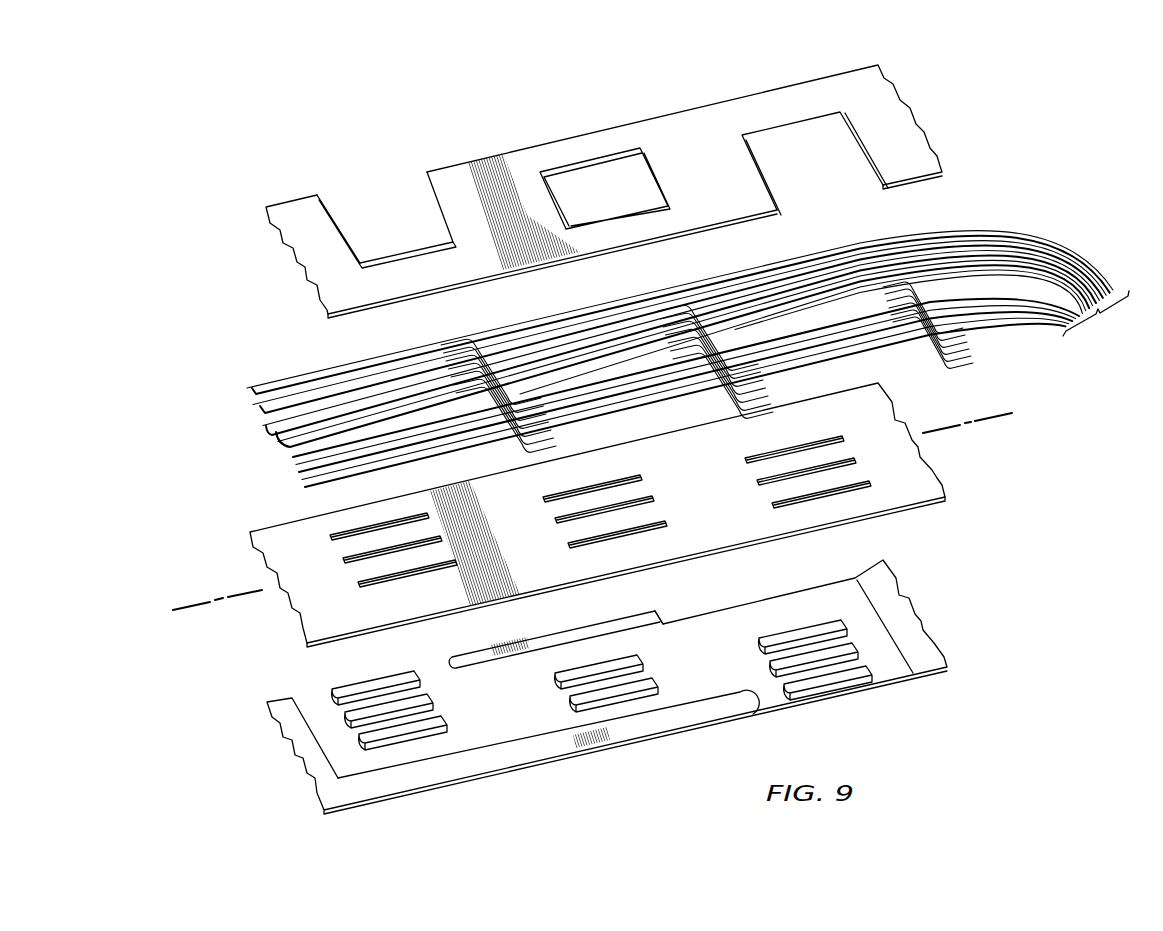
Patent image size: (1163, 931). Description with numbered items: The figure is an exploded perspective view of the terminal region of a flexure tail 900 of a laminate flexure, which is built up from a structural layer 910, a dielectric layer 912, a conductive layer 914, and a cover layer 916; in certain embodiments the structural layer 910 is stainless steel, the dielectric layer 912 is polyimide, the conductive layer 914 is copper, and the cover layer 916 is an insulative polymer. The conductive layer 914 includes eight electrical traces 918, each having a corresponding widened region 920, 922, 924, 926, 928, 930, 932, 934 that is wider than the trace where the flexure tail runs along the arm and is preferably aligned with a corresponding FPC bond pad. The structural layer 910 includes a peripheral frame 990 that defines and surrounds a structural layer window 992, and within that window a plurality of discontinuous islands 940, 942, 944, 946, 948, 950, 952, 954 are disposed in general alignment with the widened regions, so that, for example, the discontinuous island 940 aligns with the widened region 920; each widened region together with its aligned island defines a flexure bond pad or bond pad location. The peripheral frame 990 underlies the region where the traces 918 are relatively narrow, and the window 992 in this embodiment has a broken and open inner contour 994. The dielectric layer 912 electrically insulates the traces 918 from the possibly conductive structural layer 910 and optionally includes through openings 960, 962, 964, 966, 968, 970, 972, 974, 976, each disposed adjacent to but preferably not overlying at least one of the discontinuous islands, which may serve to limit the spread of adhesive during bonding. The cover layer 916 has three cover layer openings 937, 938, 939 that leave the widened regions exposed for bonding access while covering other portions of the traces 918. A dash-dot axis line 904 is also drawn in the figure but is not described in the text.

The flexure tail 900 is at (268, 115).
The axis 904 is at (242, 592).
The structural layer 910 is at (640, 685).
The dielectric layer 912 is at (638, 515).
The conductive layer 914 is at (688, 337).
The cover layer 916 is at (639, 191).
The electrical traces 918 is at (1096, 321).
The widened region 920 is at (383, 362).
The widened region 922 is at (410, 380).
The widened region 924 is at (360, 417).
The widened region 926 is at (557, 347).
The widened region 928 is at (625, 363).
The widened region 930 is at (770, 317).
The widened region 932 is at (800, 338).
The widened region 934 is at (858, 348).
The cover layer opening 937 is at (795, 169).
The cover layer opening 938 is at (586, 198).
The cover layer opening 939 is at (371, 230).
The discontinuous island 940 is at (373, 685).
The discontinuous island 942 is at (430, 698).
The discontinuous island 944 is at (440, 720).
The discontinuous island 946 is at (577, 667).
The discontinuous island 948 is at (613, 693).
The discontinuous island 950 is at (817, 627).
The discontinuous island 952 is at (773, 660).
The discontinuous island 954 is at (830, 677).
The through opening 960 is at (343, 540).
The through opening 962 is at (357, 560).
The through opening 964 is at (412, 572).
The through opening 966 is at (648, 478).
The through opening 968 is at (563, 525).
The through opening 970 is at (618, 534).
The through opening 972 is at (803, 445).
The through opening 974 is at (768, 480).
The through opening 976 is at (780, 506).
The peripheral frame 990 is at (688, 610).
The structural layer window 992 is at (658, 659).
The inner contour 994 is at (733, 603).